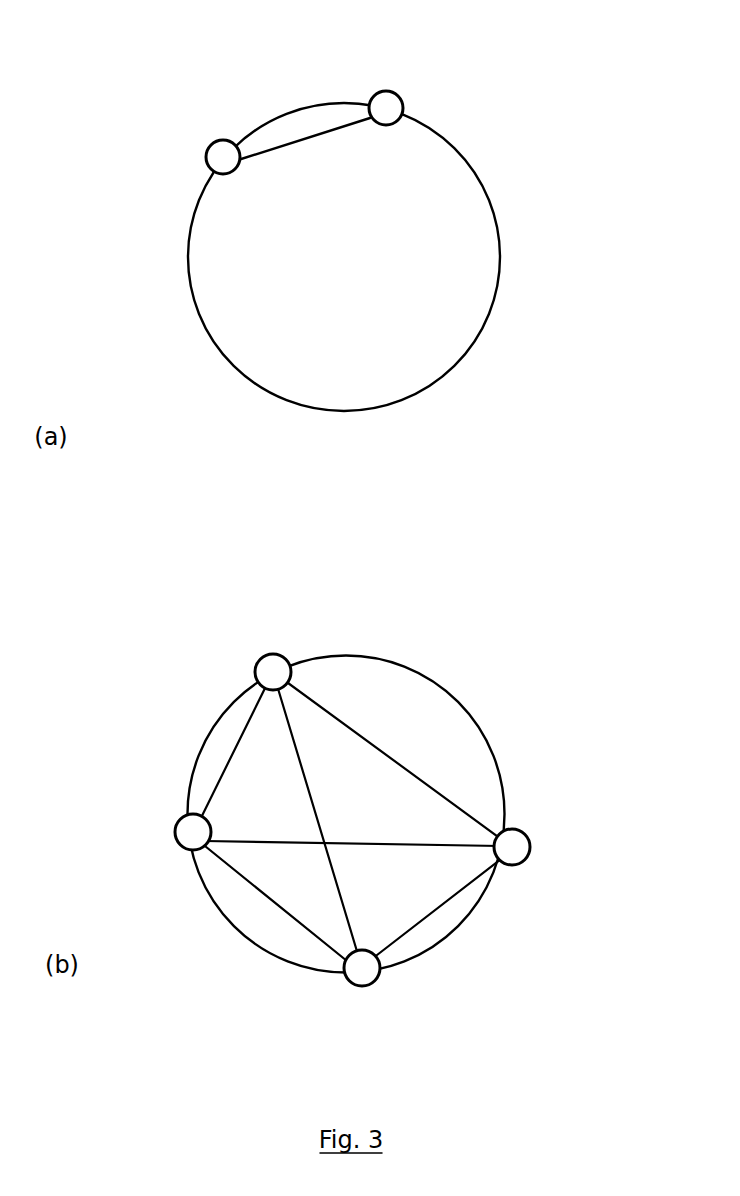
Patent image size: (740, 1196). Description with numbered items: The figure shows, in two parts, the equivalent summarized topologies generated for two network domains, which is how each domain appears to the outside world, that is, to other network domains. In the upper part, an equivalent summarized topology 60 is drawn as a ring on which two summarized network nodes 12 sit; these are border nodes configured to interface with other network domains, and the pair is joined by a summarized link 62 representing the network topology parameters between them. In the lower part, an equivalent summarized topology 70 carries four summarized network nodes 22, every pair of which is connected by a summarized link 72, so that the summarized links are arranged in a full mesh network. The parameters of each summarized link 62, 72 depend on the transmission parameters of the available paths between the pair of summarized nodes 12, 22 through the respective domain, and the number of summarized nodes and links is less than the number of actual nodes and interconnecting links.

The network node 12 is at (221, 140).
The equivalent summarized topology 60 is at (540, 116).
The summarized link 62 is at (302, 137).
The network node 22 is at (274, 653).
The equivalent summarized topology 70 is at (502, 662).
The summarized link 72 is at (427, 789).